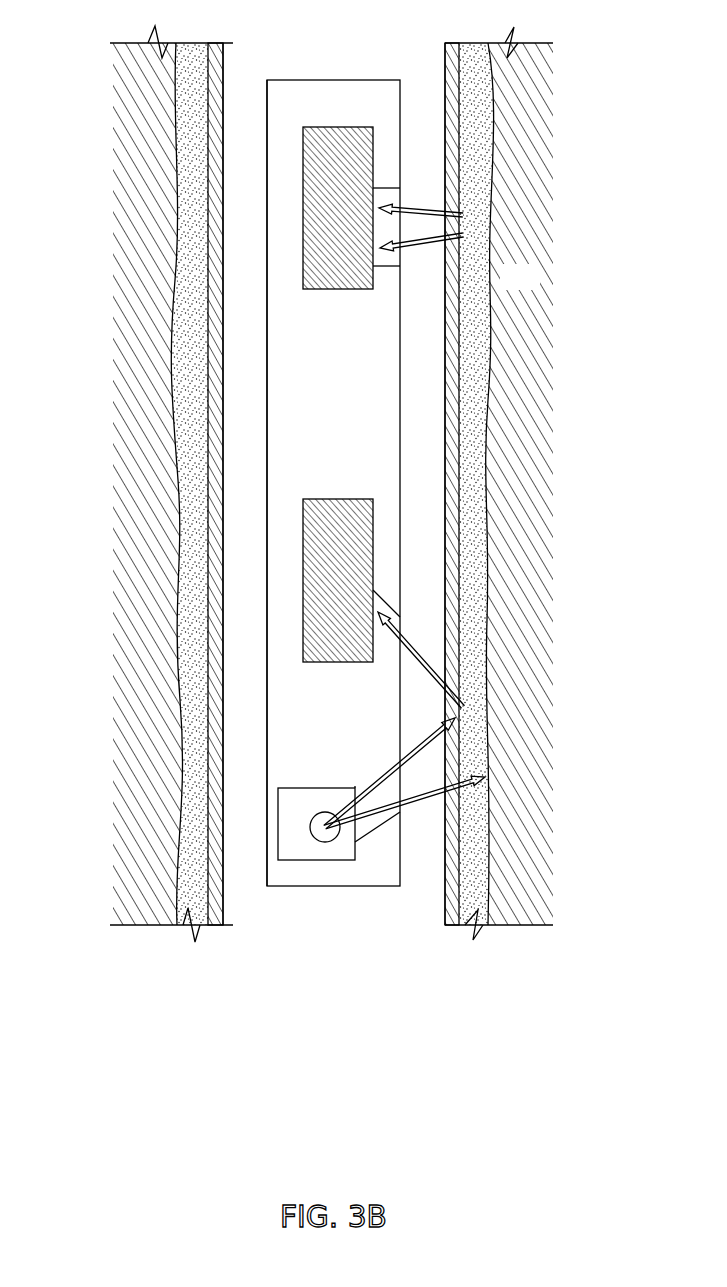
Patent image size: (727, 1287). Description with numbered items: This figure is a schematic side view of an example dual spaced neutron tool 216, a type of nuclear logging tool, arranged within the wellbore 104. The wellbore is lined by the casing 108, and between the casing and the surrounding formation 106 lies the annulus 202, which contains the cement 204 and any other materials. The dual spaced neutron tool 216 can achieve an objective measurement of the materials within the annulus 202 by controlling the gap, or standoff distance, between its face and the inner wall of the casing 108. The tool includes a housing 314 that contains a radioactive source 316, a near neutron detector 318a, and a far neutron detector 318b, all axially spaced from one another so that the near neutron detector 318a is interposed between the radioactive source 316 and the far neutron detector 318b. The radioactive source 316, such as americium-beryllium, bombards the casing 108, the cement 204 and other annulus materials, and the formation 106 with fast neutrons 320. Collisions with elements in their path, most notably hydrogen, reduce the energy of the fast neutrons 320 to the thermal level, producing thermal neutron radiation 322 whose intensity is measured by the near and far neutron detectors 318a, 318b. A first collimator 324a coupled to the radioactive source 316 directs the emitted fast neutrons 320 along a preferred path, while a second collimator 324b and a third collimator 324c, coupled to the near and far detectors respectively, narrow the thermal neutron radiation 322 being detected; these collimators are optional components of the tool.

The wellbore 104 is at (497, 128).
The formation 106 is at (538, 287).
The casing 108 is at (460, 340).
The annulus 202 is at (472, 420).
The cement 204 is at (487, 488).
The dual spaced neutron tool 216 is at (260, 100).
The housing 314 is at (267, 412).
The radioactive source 316 is at (278, 818).
The near neutron detector 318a is at (303, 606).
The far neutron detector 318b is at (303, 197).
The fast neutrons 320 is at (440, 738).
The thermal neutron radiation 322 is at (463, 214).
The first collimator 324a is at (356, 786).
The second collimator 324b is at (390, 645).
The third collimator 324c is at (377, 291).